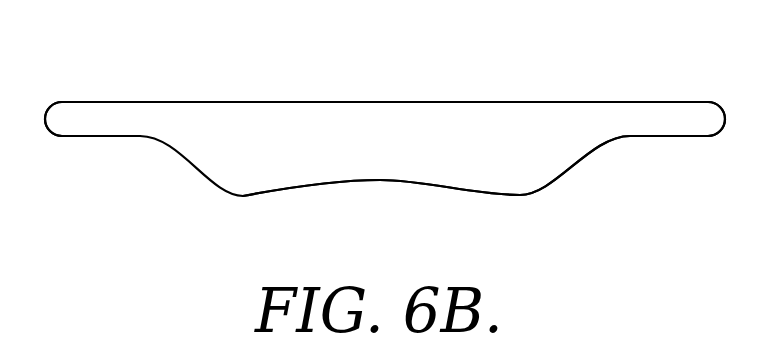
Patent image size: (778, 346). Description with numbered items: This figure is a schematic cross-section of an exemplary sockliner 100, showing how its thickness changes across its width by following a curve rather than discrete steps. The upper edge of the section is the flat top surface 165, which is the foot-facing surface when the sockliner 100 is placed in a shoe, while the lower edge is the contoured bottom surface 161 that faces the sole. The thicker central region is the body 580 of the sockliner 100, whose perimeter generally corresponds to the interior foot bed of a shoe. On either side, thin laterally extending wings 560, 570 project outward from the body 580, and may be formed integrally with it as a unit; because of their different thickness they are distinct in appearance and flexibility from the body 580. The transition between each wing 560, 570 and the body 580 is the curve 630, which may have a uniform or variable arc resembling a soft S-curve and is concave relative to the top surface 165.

The sockliner 100 is at (567, 257).
The bottom surface 161 is at (370, 182).
The top surface 165 is at (367, 102).
The wing 560 is at (86, 116).
The wing 570 is at (663, 122).
The body 580 is at (454, 112).
The curve 630 is at (580, 163).